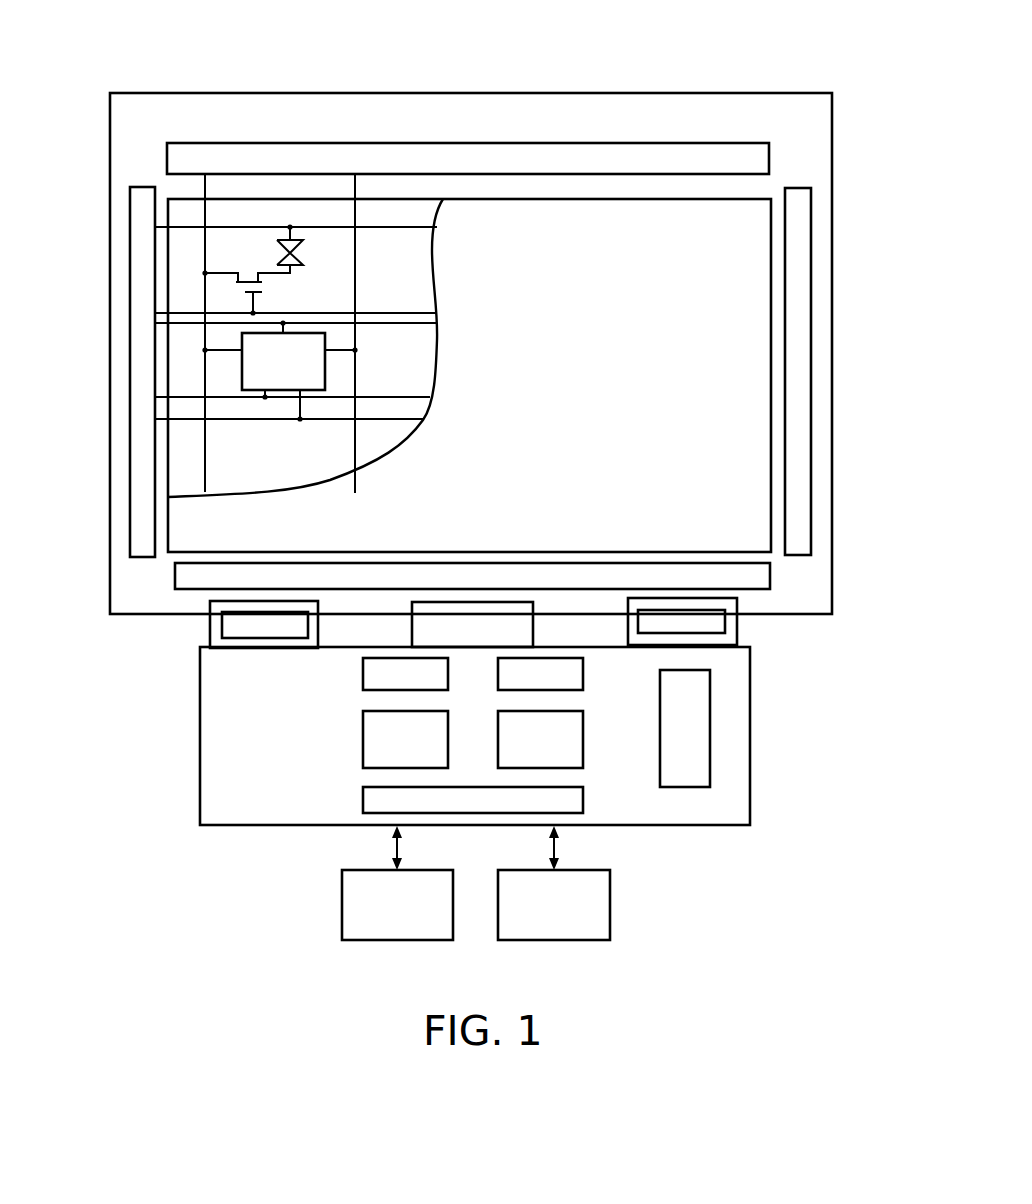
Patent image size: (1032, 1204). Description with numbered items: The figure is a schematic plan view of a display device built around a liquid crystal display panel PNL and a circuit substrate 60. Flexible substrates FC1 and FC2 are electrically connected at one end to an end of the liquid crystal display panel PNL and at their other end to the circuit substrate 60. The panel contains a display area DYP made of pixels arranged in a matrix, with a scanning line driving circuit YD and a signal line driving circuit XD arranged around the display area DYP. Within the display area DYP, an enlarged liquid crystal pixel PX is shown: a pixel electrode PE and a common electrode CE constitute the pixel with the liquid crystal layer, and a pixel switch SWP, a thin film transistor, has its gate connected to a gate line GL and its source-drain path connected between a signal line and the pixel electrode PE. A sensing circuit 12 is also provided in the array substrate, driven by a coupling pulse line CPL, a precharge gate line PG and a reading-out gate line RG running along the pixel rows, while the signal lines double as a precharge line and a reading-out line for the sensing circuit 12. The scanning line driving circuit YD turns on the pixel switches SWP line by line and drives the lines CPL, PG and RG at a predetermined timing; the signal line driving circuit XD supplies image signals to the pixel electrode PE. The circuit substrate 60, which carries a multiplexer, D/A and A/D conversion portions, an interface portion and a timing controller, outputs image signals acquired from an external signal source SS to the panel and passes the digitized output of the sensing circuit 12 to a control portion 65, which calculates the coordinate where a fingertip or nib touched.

The liquid crystal display panel PNL is at (741, 78).
The signal line driving circuit XD is at (489, 142).
The scanning line driving circuit YD is at (130, 322).
The display area DYP is at (743, 226).
The liquid crystal pixel PX is at (277, 270).
The common electrode CE is at (301, 246).
The pixel electrode PE is at (292, 268).
The pixel switch SWP is at (255, 291).
The gate line GL is at (430, 310).
The precharge gate line PG is at (425, 325).
The sensing circuit 12 is at (325, 340).
The coupling pulse line CPL is at (410, 395).
The reading-out gate line RG is at (410, 417).
The flexible substrate FC1 is at (412, 630).
The flexible substrate FC2 is at (210, 632).
The circuit substrate 60 is at (762, 748).
The external signal source SS is at (342, 890).
The control portion 65 is at (611, 888).